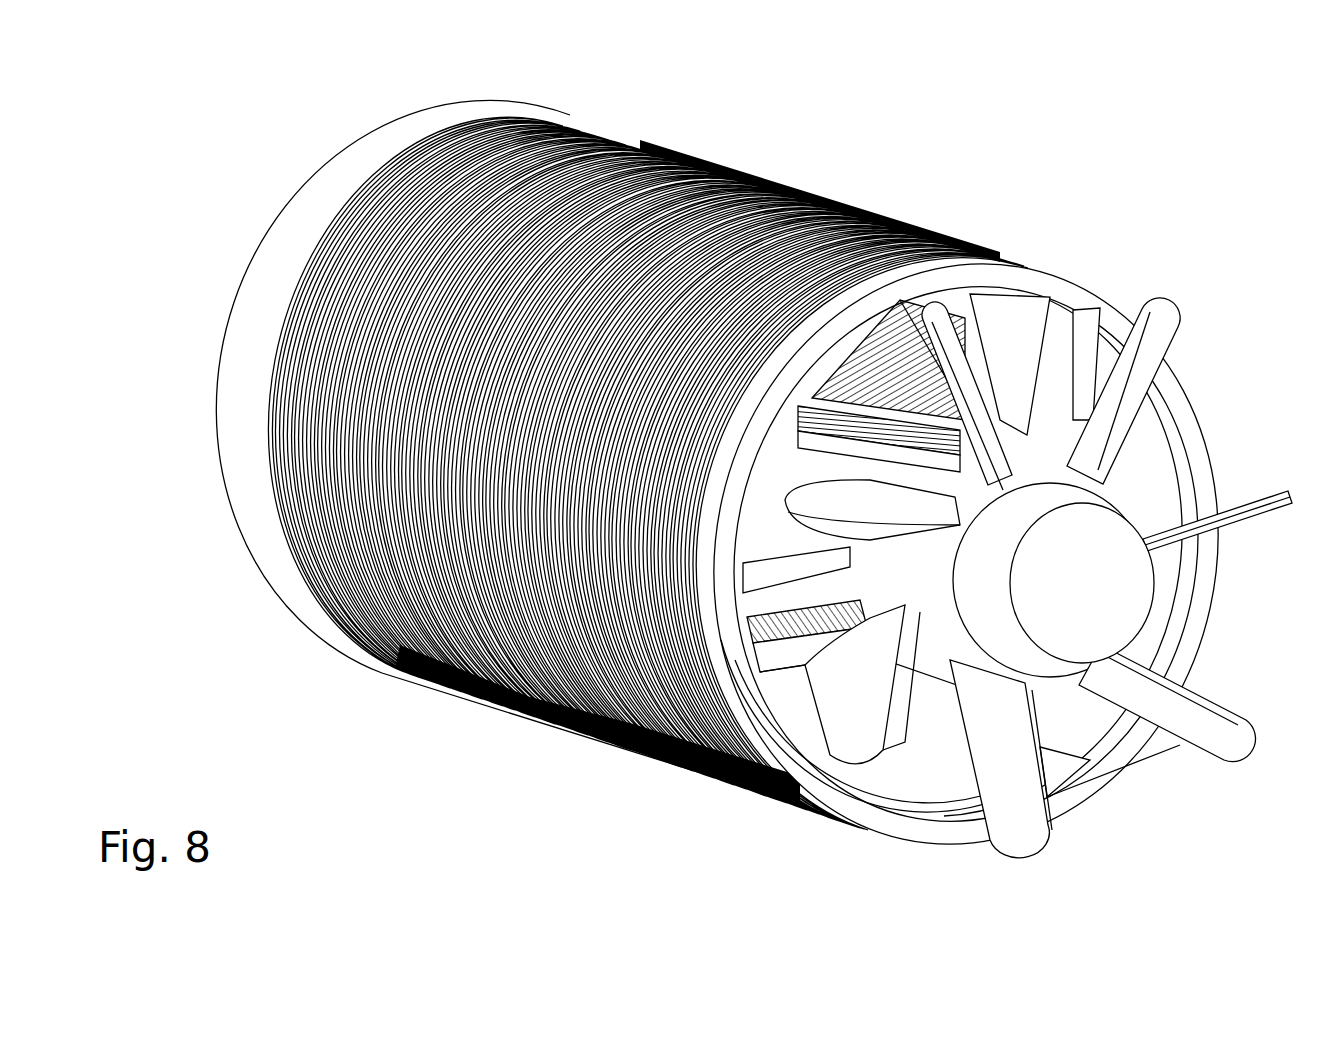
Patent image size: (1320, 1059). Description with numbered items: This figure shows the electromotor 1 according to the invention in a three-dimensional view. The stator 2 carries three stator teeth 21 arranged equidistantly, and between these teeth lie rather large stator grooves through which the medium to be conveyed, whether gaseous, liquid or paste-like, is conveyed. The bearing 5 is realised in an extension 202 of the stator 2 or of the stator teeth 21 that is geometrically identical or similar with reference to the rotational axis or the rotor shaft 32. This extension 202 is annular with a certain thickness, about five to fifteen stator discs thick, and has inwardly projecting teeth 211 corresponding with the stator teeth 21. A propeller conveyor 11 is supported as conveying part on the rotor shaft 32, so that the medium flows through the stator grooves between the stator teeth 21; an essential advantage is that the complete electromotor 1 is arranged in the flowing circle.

The electromotor 1 is at (1019, 140).
The stator 2 is at (320, 200).
The bearing 5 is at (1010, 455).
The propeller conveyor 11 is at (845, 732).
The stator teeth 21 is at (890, 315).
The rotor shaft 32 is at (806, 445).
The extension 202 is at (928, 262).
The inwardly projecting teeth 211 is at (1005, 340).